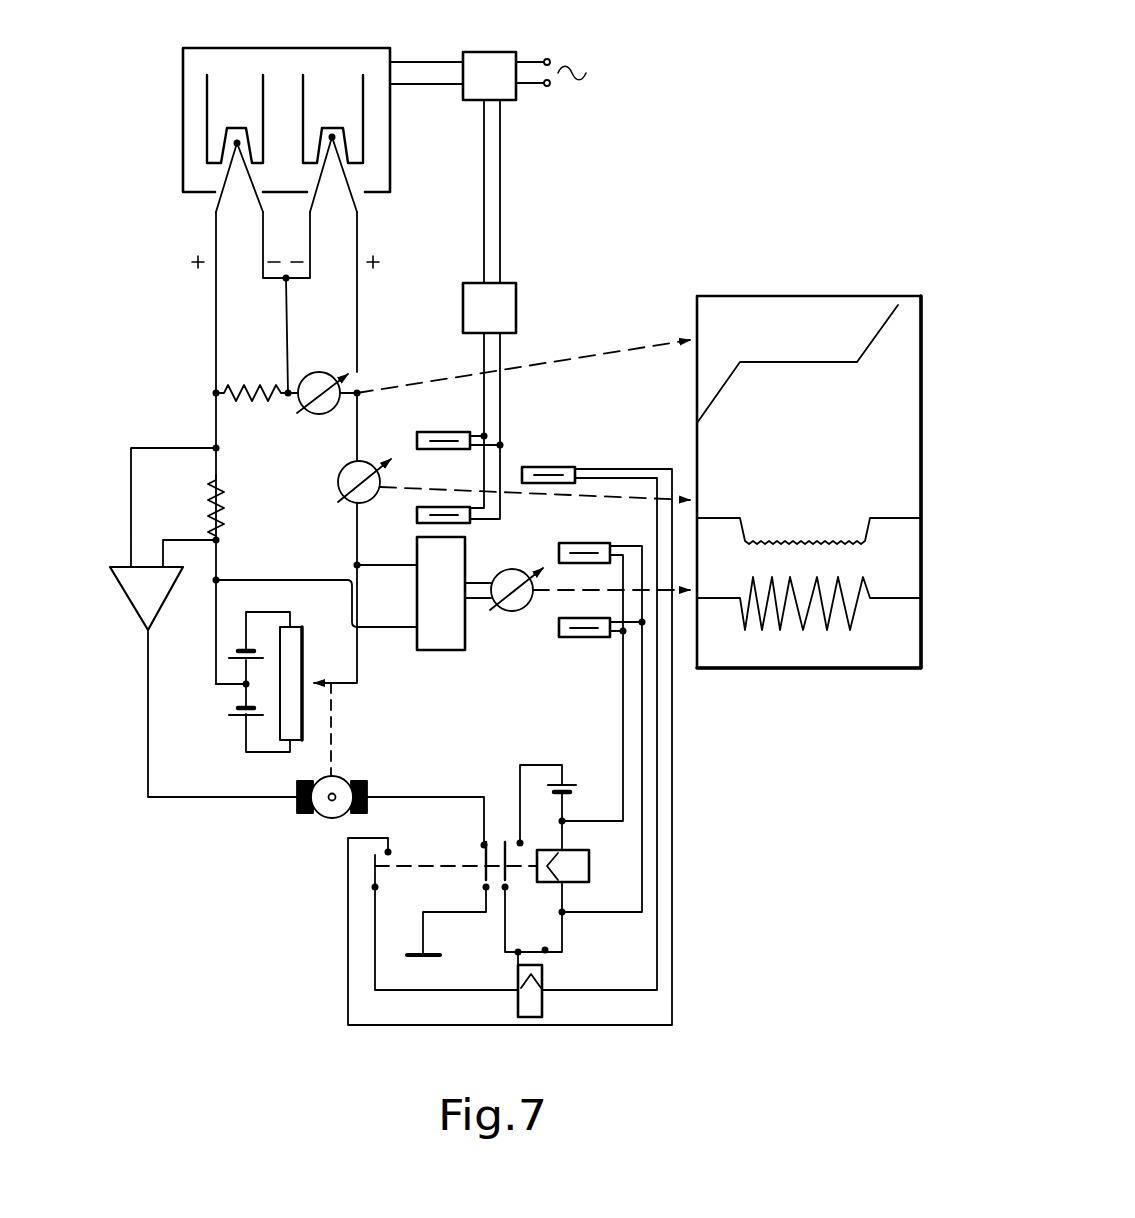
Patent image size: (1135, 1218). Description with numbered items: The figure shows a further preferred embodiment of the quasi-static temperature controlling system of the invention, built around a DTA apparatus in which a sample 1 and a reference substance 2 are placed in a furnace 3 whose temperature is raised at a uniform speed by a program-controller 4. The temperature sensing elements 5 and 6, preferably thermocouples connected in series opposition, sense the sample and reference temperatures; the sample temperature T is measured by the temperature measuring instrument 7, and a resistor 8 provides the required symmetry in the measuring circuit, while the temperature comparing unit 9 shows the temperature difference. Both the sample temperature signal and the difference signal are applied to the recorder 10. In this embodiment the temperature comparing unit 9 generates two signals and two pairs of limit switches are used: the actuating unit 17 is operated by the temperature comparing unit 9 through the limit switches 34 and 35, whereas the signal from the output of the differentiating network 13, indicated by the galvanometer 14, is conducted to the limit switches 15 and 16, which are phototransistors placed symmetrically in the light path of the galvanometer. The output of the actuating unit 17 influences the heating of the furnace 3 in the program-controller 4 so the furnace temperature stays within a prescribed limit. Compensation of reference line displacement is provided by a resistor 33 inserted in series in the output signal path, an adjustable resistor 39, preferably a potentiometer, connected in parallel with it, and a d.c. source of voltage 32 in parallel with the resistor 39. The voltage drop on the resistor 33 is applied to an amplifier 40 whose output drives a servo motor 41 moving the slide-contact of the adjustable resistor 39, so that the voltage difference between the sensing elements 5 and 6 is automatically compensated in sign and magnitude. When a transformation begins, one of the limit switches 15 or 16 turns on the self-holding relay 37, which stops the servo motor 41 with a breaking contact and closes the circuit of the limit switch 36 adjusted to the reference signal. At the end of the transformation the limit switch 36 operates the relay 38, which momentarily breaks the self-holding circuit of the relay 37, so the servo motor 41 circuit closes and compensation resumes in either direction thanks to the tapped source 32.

The sample 1 is at (328, 80).
The reference substance 2 is at (226, 80).
The furnace 3 is at (183, 130).
The program-controller 4 is at (508, 60).
The temperature sensing element 5 is at (310, 212).
The temperature sensing element 6 is at (263, 212).
The temperature measuring instrument 7 is at (322, 408).
The resistor 8 is at (248, 392).
The temperature comparing unit 9 is at (338, 484).
The recorder 10 is at (782, 308).
The differentiating network 13 is at (437, 641).
The galvanometer 14 is at (516, 612).
The limit switch 15 is at (574, 550).
The limit switch 16 is at (580, 640).
The actuating unit 17 is at (498, 322).
The d.c. source of voltage 32 is at (246, 722).
The resistor 33 is at (222, 498).
The limit switch 34 is at (456, 431).
The limit switch 35 is at (418, 520).
The limit switch 36 is at (548, 467).
The self-holding relay 37 is at (580, 872).
The relay 38 is at (544, 970).
The adjustable resistor 39 is at (303, 658).
The amplifier 40 is at (156, 594).
The servo motor 41 is at (318, 812).